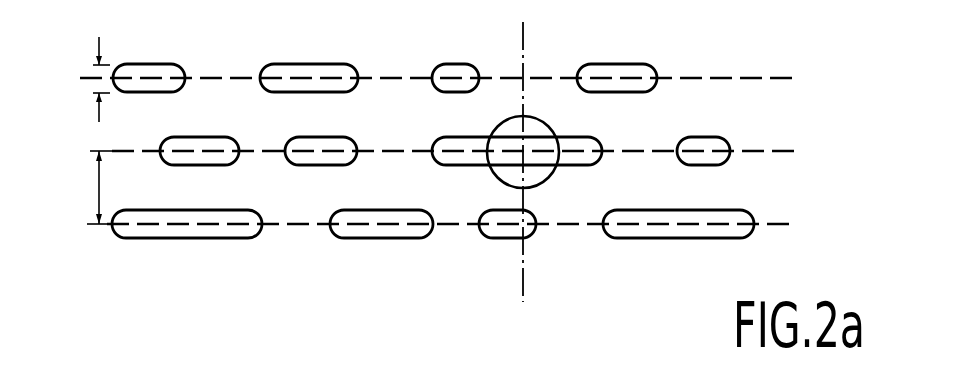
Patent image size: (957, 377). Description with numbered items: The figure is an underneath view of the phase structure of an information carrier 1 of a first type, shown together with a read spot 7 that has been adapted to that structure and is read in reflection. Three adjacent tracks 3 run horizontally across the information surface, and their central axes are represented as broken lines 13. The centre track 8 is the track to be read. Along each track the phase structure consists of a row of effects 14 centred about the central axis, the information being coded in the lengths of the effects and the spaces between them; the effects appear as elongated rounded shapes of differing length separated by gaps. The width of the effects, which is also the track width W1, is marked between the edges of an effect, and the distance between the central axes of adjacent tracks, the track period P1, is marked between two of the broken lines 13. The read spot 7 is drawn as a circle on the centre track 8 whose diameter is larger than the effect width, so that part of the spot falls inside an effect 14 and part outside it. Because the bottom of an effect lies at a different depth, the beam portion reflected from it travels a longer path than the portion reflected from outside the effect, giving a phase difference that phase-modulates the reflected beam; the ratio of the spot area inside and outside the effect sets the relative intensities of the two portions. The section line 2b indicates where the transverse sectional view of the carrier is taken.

The information carrier 1 is at (857, 127).
The tracks 3 is at (448, 152).
The centre track 8 is at (472, 151).
The broken lines 13 is at (402, 151).
The read spot 7 is at (547, 125).
The effect 14 is at (443, 87).
The track width W1 is at (99, 38).
The track period P1 is at (99, 187).
The section line 2b is at (514, 28).